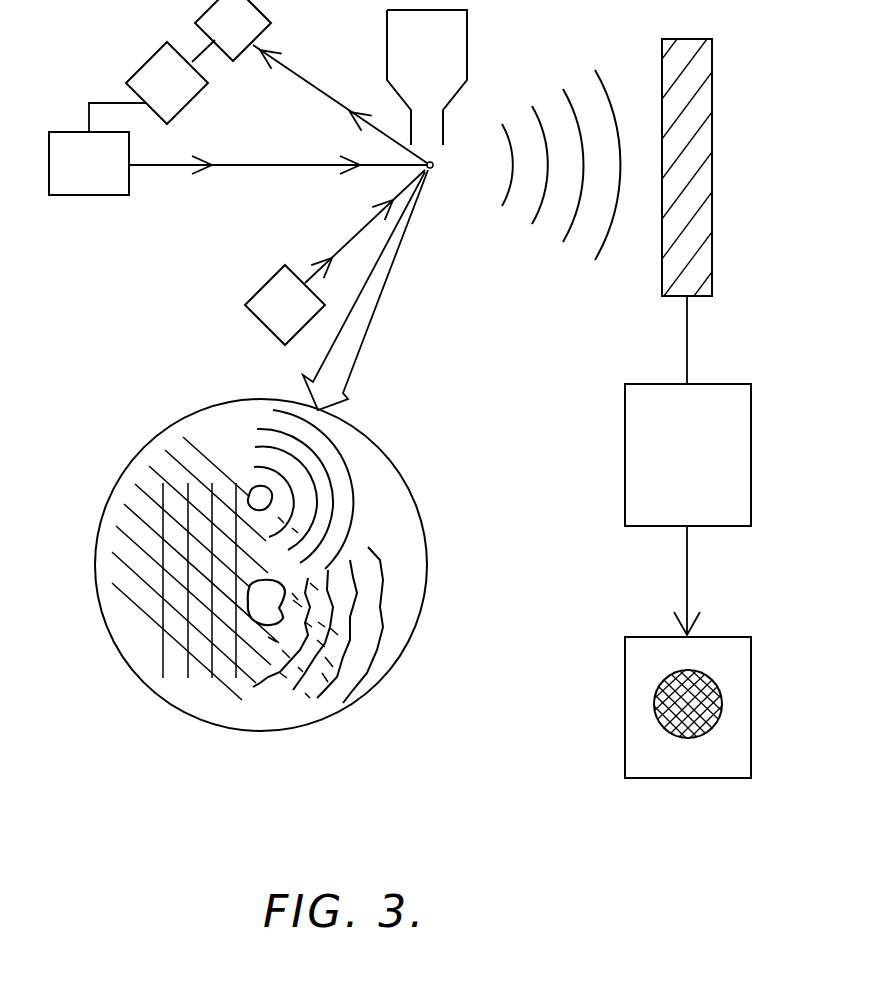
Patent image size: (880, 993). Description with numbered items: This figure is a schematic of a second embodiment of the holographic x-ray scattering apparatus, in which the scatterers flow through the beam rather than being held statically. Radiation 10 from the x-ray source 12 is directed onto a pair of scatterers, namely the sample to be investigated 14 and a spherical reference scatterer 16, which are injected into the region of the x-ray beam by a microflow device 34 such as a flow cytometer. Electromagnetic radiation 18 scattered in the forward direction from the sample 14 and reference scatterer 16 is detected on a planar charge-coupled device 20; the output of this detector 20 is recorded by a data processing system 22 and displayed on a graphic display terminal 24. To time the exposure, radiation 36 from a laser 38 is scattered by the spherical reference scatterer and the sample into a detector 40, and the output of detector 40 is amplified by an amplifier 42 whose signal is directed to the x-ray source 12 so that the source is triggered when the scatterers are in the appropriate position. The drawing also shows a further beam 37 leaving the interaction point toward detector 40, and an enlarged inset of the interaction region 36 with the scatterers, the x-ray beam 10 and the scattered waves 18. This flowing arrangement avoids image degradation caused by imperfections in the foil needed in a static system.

The radiation 10 is at (274, 163).
The x-ray source 12 is at (72, 181).
The sample to be investigated 14 is at (258, 626).
The reference scatterer 16 is at (258, 491).
The electromagnetic radiation 18 is at (543, 103).
The planar charge-coupled device 20 is at (662, 235).
The data processing system 22 is at (670, 468).
The graphic display terminal 24 is at (625, 727).
The microflow device 34 is at (408, 67).
The radiation 36 is at (145, 617).
The reflected beam 37 is at (341, 100).
The laser 38 is at (270, 318).
The detector 40 is at (233, 30).
The amplifier 42 is at (152, 100).